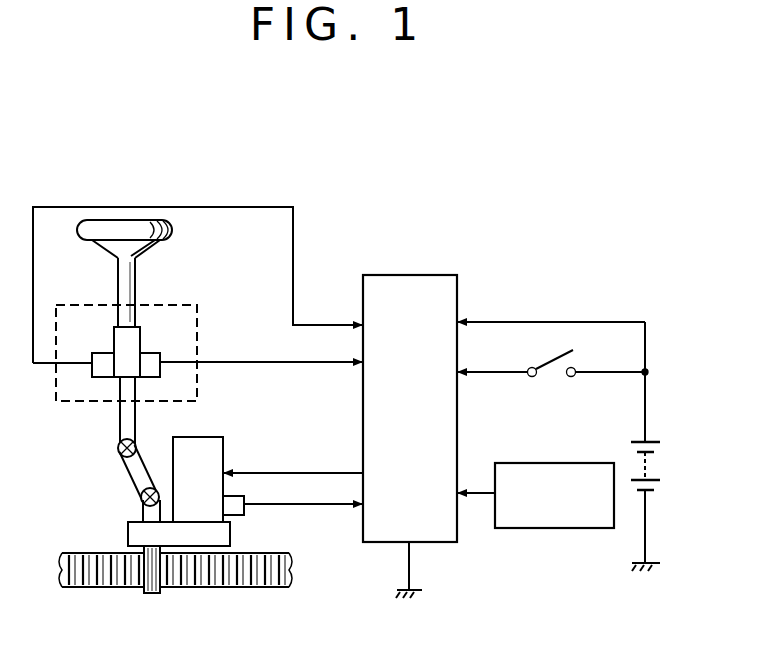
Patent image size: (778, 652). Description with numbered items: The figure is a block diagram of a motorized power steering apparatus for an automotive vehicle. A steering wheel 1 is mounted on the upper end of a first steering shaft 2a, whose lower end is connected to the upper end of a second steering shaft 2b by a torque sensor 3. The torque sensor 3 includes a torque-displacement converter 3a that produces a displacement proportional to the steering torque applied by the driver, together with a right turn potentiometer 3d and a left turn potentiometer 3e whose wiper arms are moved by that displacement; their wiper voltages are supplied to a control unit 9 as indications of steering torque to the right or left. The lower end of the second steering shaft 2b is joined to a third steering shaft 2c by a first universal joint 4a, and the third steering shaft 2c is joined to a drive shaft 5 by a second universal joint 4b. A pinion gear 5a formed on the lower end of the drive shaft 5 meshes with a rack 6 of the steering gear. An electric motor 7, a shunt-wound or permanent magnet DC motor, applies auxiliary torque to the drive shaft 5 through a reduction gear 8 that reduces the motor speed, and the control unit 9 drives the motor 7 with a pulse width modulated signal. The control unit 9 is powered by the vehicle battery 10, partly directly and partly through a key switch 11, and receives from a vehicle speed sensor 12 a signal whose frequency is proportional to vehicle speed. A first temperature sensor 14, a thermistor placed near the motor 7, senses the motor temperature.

The steering wheel 1 is at (172, 231).
The first steering shaft 2a is at (131, 270).
The second steering shaft 2b is at (118, 426).
The third steering shaft 2c is at (131, 483).
The torque sensor 3 is at (83, 310).
The torque-displacement converter 3a is at (133, 346).
The right turn potentiometer 3d is at (160, 357).
The left turn potentiometer 3e is at (104, 358).
The first universal joint 4a is at (118, 449).
The second universal joint 4b is at (139, 500).
The drive shaft 5 is at (140, 513).
The pinion gear 5a is at (150, 595).
The rack 6 is at (222, 587).
The electric motor 7 is at (210, 437).
The reduction gear 8 is at (231, 534).
The control unit 9 is at (441, 543).
The vehicle battery 10 is at (656, 468).
The key switch 11 is at (545, 375).
The vehicle speed sensor 12 is at (540, 529).
The first temperature sensor 14 is at (248, 497).